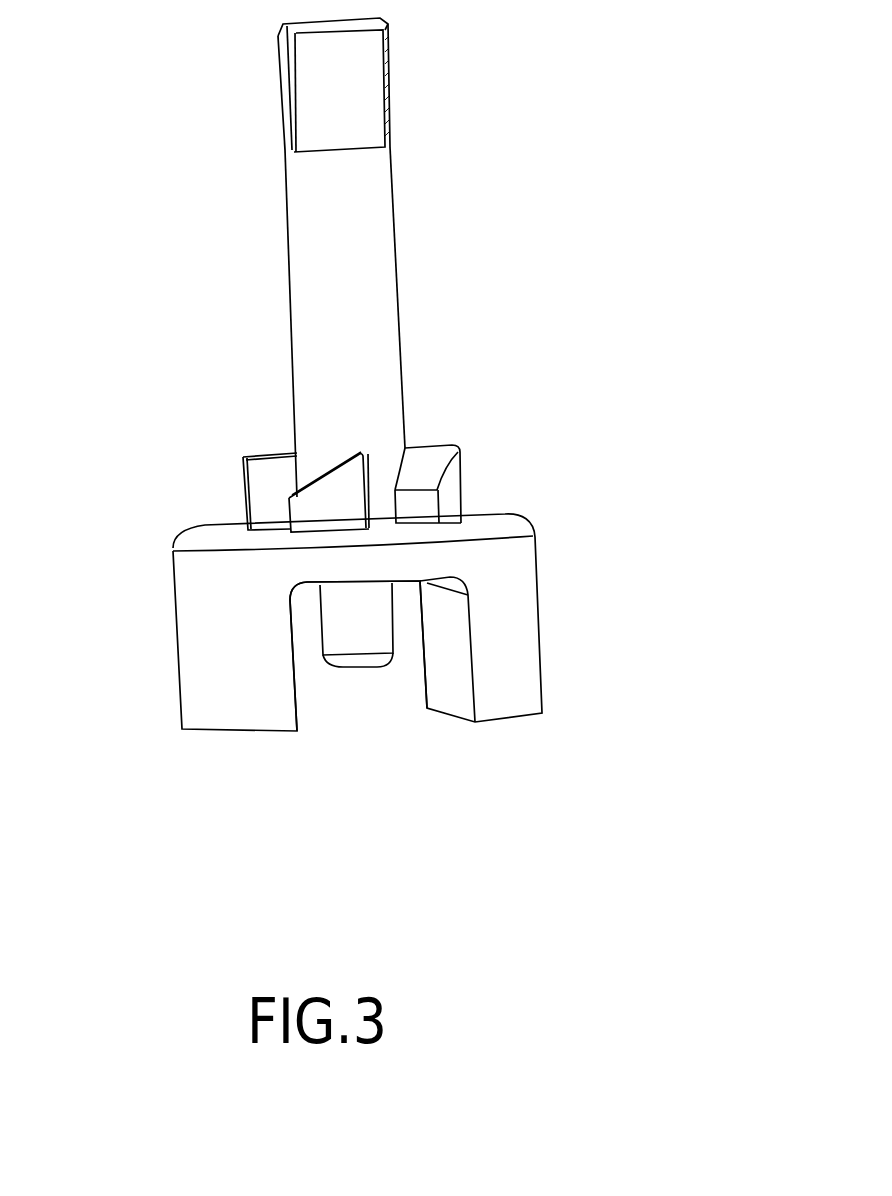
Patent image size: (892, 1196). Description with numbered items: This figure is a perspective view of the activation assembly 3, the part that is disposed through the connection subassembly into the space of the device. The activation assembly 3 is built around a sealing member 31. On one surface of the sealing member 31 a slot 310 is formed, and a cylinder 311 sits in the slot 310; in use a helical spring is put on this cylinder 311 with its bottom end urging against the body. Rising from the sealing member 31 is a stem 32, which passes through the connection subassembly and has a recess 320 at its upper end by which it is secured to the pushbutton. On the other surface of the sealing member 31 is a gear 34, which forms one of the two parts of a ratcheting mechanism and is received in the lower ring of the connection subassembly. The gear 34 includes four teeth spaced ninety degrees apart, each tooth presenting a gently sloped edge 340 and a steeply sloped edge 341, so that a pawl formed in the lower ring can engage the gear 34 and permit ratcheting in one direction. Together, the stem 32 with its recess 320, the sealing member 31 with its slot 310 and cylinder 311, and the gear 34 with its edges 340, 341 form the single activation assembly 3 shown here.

The activation assembly 3 is at (348, 767).
The sealing member 31 is at (505, 597).
The slot 310 is at (413, 653).
The cylinder 311 is at (358, 632).
The stem 32 is at (323, 232).
The recess 320 is at (337, 107).
The gear 34 is at (692, 405).
The gently sloped edge 340 is at (430, 473).
The steeply sloped edge 341 is at (425, 515).